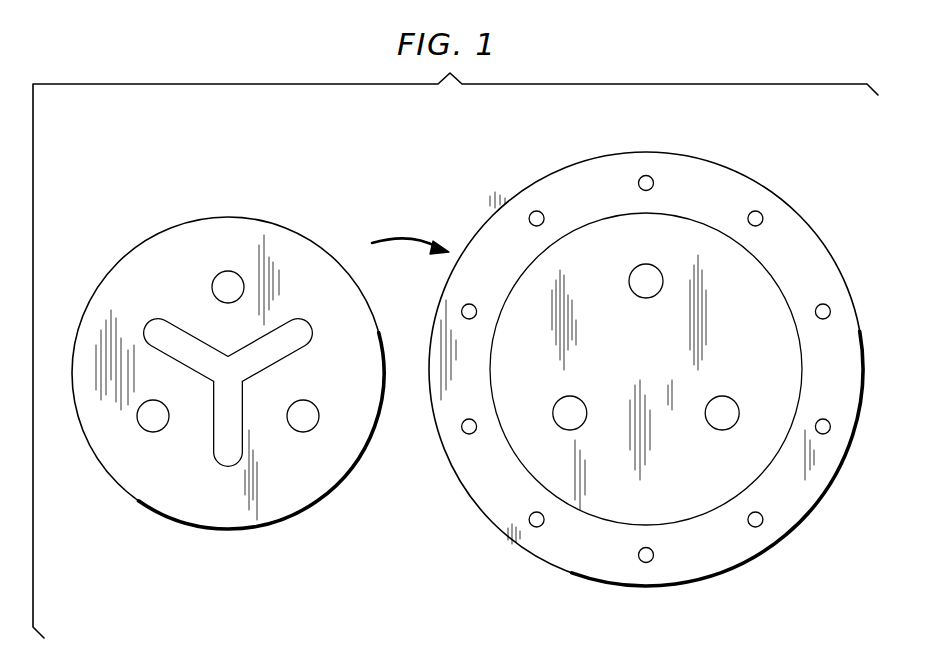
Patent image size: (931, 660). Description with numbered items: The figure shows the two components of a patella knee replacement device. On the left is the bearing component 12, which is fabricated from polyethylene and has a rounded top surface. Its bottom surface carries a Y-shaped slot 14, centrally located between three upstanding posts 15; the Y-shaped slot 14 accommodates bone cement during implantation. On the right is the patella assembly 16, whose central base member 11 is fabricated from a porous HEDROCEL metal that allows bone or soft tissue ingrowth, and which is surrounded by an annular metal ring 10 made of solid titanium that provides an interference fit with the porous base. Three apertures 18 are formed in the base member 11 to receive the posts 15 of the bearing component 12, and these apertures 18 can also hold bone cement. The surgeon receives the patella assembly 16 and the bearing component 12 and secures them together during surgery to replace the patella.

The annular metal ring 10 is at (790, 228).
The central base member 11 is at (761, 306).
The bearing component 12 is at (313, 253).
The Y-shaped slot 14 is at (223, 455).
The upstanding posts 15 is at (228, 278).
The patella assembly 16 is at (698, 142).
The apertures 18 is at (636, 265).